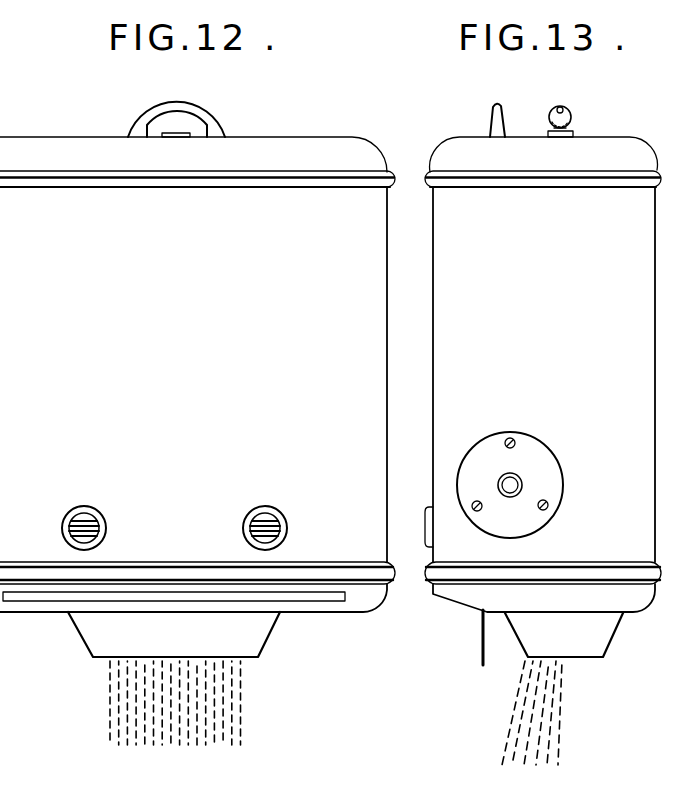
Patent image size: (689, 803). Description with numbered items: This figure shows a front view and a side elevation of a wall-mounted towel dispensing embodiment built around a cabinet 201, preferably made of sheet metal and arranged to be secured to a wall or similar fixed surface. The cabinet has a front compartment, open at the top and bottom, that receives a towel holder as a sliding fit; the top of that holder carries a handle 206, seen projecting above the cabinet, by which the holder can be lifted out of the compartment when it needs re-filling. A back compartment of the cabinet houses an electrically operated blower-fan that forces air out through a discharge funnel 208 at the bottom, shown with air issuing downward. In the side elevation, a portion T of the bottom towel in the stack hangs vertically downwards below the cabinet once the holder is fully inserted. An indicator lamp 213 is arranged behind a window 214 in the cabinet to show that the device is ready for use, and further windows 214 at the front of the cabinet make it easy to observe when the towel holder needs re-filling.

In FIG. 12, the cabinet 201 is at (298, 205).
In FIG. 13, the cabinet 201 is at (607, 198).
In FIG. 12, the handle 206 is at (143, 122).
In FIG. 13, the handle 206 is at (493, 118).
In FIG. 12, the discharge funnel 208 is at (268, 627).
In FIG. 13, the discharge funnel 208 is at (612, 627).
In FIG. 13, the indicator lamp 213 is at (522, 482).
In FIG. 12, the window 214 is at (245, 532).
In FIG. 13, the portion of the bottom towel T is at (480, 642).